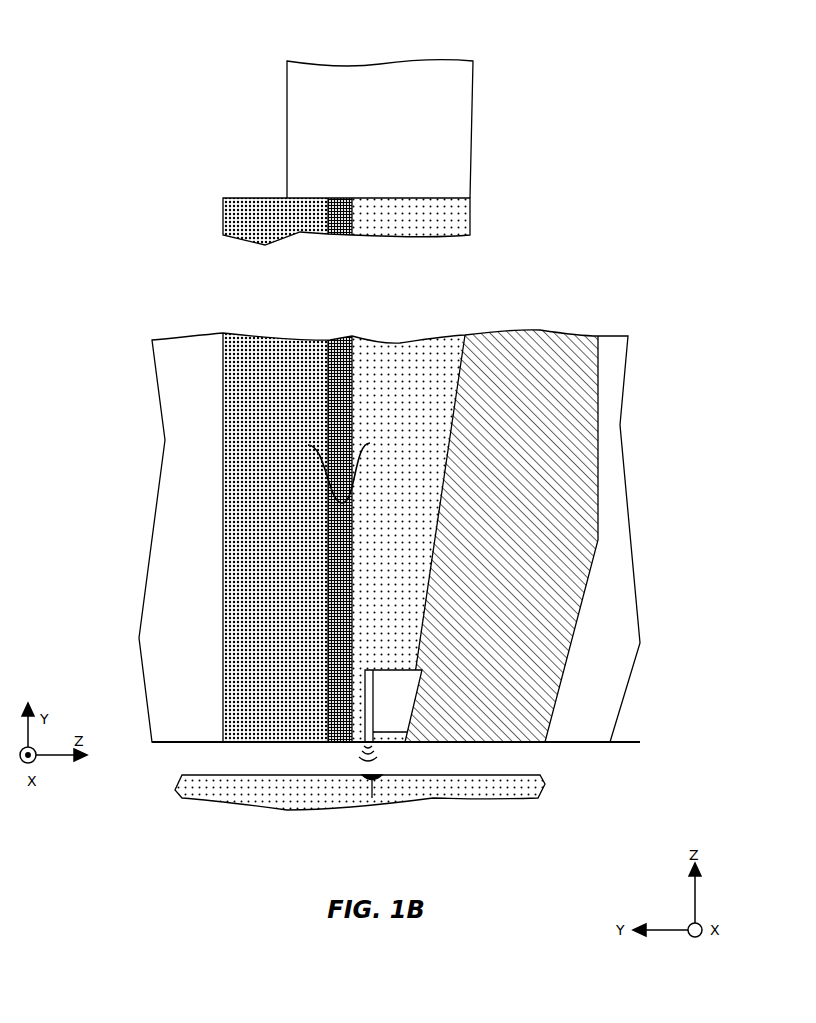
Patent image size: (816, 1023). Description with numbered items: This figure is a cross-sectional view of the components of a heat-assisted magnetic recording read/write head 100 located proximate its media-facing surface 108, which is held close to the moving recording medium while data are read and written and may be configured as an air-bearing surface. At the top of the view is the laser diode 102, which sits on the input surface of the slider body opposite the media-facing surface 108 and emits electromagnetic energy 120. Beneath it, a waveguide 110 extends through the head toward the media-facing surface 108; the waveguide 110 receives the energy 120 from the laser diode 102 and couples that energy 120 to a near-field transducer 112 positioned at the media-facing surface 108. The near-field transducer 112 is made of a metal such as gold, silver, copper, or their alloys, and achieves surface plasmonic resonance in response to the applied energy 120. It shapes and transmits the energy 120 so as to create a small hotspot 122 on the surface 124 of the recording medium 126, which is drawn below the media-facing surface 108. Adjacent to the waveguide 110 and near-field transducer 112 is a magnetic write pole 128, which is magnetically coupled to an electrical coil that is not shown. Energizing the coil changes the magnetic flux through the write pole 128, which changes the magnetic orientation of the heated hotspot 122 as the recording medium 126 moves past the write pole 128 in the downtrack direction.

The read/write head 100 is at (354, 415).
The laser diode 102 is at (287, 132).
The media-facing surface 108 is at (612, 745).
The waveguide 110 is at (458, 313).
The near-field transducer 112 is at (360, 723).
The electromagnetic energy 120 is at (326, 468).
The hotspot 122 is at (366, 800).
The surface of recording medium 124 is at (378, 785).
The recording medium 126 is at (522, 785).
The magnetic write pole 128 is at (542, 330).